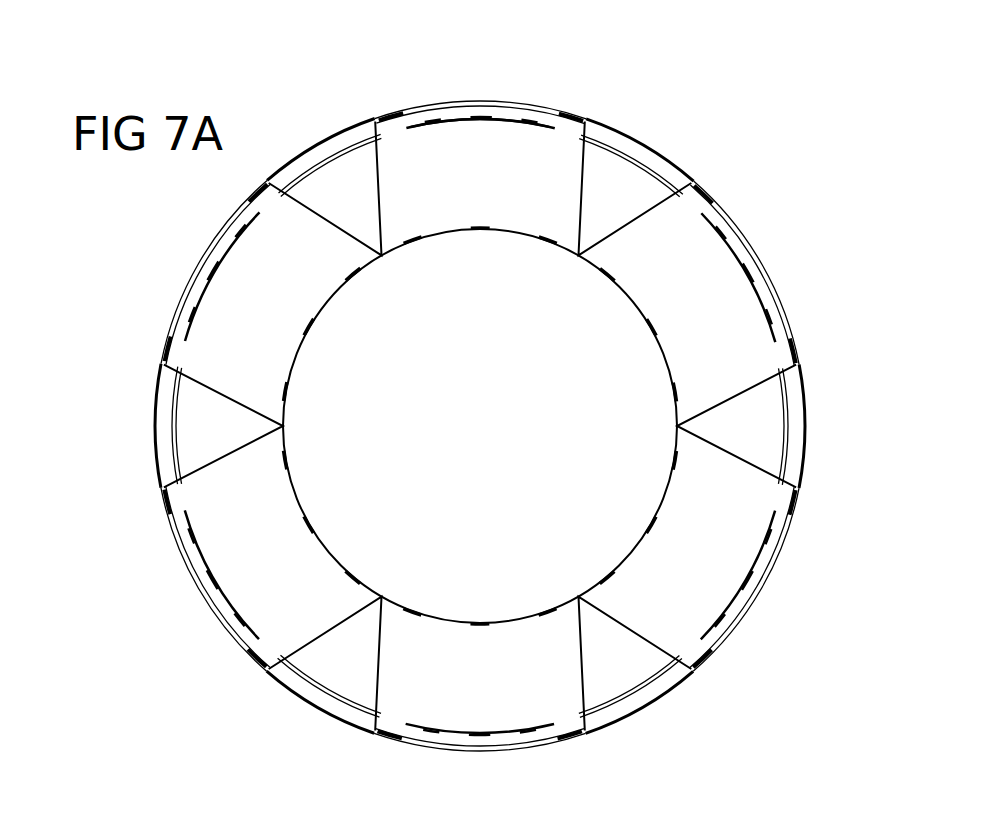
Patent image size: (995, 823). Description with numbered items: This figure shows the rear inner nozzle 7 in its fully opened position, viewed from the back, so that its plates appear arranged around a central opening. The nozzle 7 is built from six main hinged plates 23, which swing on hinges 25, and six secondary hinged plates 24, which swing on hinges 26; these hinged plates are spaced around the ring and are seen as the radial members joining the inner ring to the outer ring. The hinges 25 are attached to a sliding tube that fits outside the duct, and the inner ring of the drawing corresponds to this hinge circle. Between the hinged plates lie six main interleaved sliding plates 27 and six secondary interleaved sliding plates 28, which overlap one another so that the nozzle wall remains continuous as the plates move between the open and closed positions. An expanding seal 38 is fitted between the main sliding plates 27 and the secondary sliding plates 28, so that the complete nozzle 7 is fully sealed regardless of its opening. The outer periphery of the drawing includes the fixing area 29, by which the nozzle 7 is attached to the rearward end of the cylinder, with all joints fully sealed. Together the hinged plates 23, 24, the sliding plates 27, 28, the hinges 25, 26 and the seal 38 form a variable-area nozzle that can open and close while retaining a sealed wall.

The nozzle 7 is at (435, 148).
The main hinged plates 23 is at (525, 195).
The secondary hinged plates 24 is at (735, 235).
The hinges 25 is at (673, 395).
The hinges 26 is at (772, 513).
The main interleaved sliding plates 27 is at (605, 655).
The secondary interleaved sliding plates 28 is at (296, 697).
The fixing area 29 is at (183, 293).
The expanding seal 38 is at (175, 437).